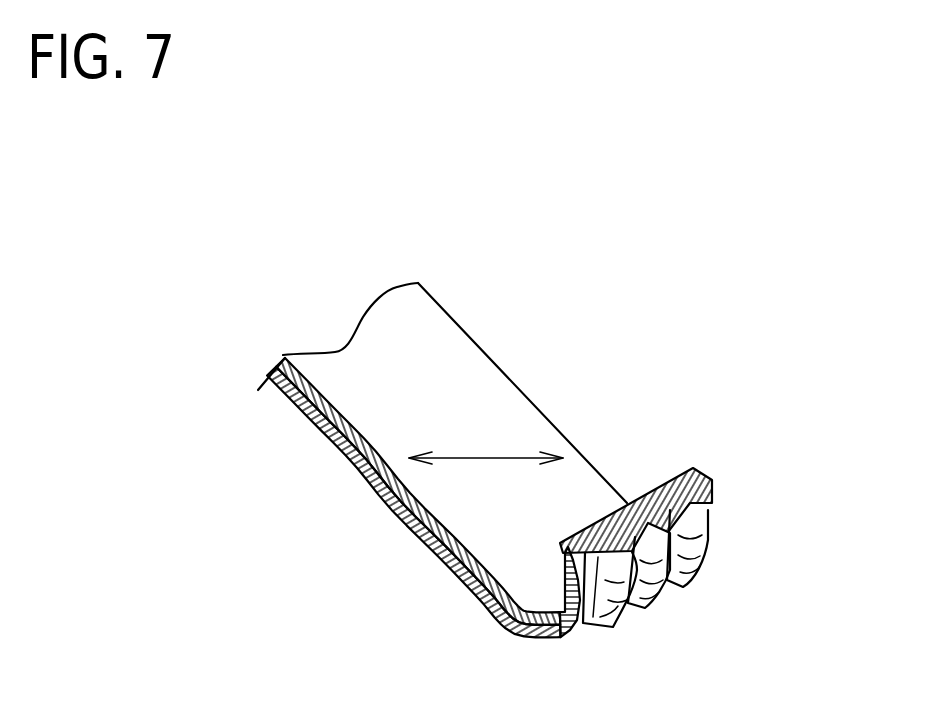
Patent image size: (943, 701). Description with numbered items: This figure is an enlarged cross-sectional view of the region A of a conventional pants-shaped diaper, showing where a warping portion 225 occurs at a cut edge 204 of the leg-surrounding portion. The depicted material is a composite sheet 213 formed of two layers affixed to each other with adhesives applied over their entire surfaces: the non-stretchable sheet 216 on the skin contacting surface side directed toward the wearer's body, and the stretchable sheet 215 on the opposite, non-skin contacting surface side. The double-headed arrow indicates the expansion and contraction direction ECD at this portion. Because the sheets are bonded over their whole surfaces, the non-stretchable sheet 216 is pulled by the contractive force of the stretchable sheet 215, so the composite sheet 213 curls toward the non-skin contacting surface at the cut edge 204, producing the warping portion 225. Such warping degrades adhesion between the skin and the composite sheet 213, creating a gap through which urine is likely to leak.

The region A is at (308, 270).
The composite sheet 213 is at (360, 488).
The stretchable sheet 215 is at (437, 330).
The warping portion 225 is at (563, 570).
The cut edge 204 is at (688, 468).
The non-stretchable sheet 216 is at (710, 538).
The expansion and contraction direction ECD is at (487, 457).